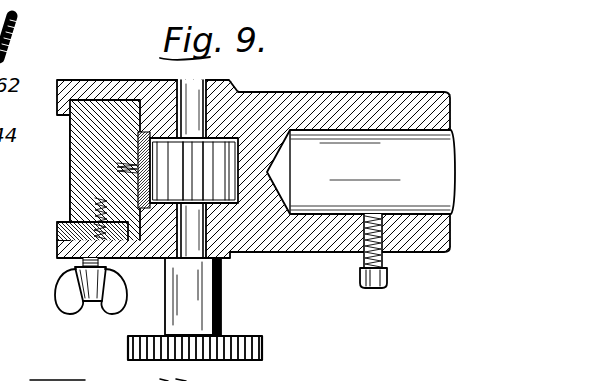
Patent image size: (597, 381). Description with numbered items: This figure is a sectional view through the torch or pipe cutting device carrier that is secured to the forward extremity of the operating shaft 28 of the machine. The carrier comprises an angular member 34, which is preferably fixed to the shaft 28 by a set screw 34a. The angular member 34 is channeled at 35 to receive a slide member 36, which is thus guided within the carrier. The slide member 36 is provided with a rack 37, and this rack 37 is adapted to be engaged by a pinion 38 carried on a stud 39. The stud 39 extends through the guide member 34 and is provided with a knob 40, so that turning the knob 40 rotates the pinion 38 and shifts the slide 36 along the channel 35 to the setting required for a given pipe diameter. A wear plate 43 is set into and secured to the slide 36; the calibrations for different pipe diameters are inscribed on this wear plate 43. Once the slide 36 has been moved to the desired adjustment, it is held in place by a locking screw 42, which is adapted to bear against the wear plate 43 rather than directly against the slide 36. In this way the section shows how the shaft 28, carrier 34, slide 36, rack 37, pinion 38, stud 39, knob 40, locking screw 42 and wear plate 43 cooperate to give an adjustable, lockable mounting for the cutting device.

The operating shaft 28 is at (402, 138).
The angular member 34 is at (345, 251).
The set screw 34a is at (384, 251).
The channel 35 is at (115, 98).
The slide member 36 is at (70, 167).
The rack 37 is at (137, 155).
The pinion 38 is at (224, 205).
The stud 39 is at (193, 248).
The knob 40 is at (249, 336).
The locking screw 42 is at (80, 264).
The wear plate 43 is at (57, 224).